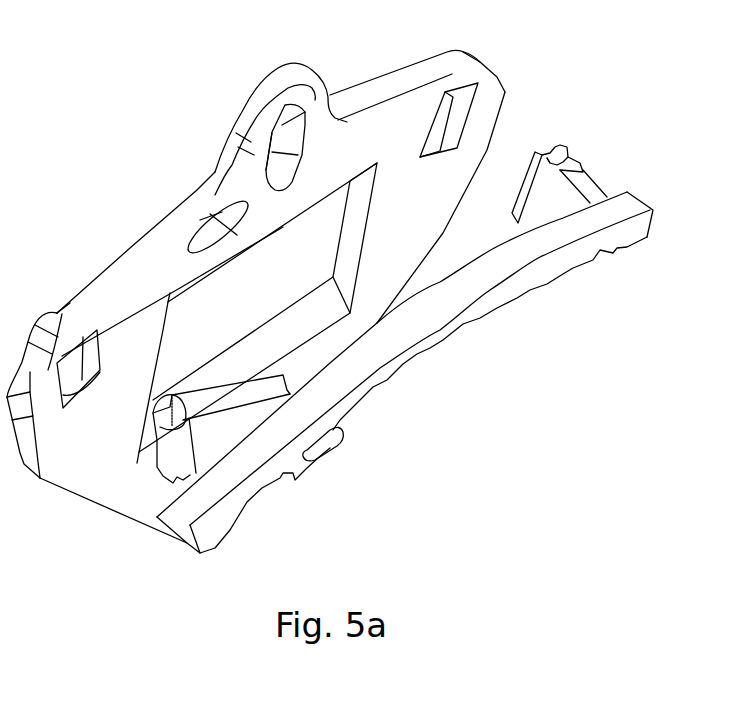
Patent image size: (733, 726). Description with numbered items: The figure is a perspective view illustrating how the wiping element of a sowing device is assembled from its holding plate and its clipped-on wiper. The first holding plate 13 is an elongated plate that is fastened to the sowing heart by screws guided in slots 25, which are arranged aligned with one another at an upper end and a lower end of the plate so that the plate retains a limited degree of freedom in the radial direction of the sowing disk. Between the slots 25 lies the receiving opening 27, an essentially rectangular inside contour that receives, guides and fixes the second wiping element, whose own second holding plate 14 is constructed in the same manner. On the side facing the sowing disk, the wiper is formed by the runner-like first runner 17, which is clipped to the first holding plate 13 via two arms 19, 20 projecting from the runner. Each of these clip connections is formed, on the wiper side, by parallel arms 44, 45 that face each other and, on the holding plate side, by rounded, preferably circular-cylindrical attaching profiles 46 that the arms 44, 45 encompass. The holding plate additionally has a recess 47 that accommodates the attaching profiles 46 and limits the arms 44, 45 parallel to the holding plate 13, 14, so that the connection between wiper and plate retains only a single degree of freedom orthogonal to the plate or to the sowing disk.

The first holding plate 13 is at (135, 296).
The second holding plate 14 is at (71, 366).
The first runner 17 is at (460, 324).
The arm 19 is at (553, 190).
The arm 20 is at (213, 440).
The slots 25 is at (270, 256).
The receiving opening 27 is at (235, 165).
The parallel arm 44 is at (512, 207).
The parallel arm 45 is at (556, 152).
The attaching profiles 46 is at (453, 100).
The recess 47 is at (473, 73).